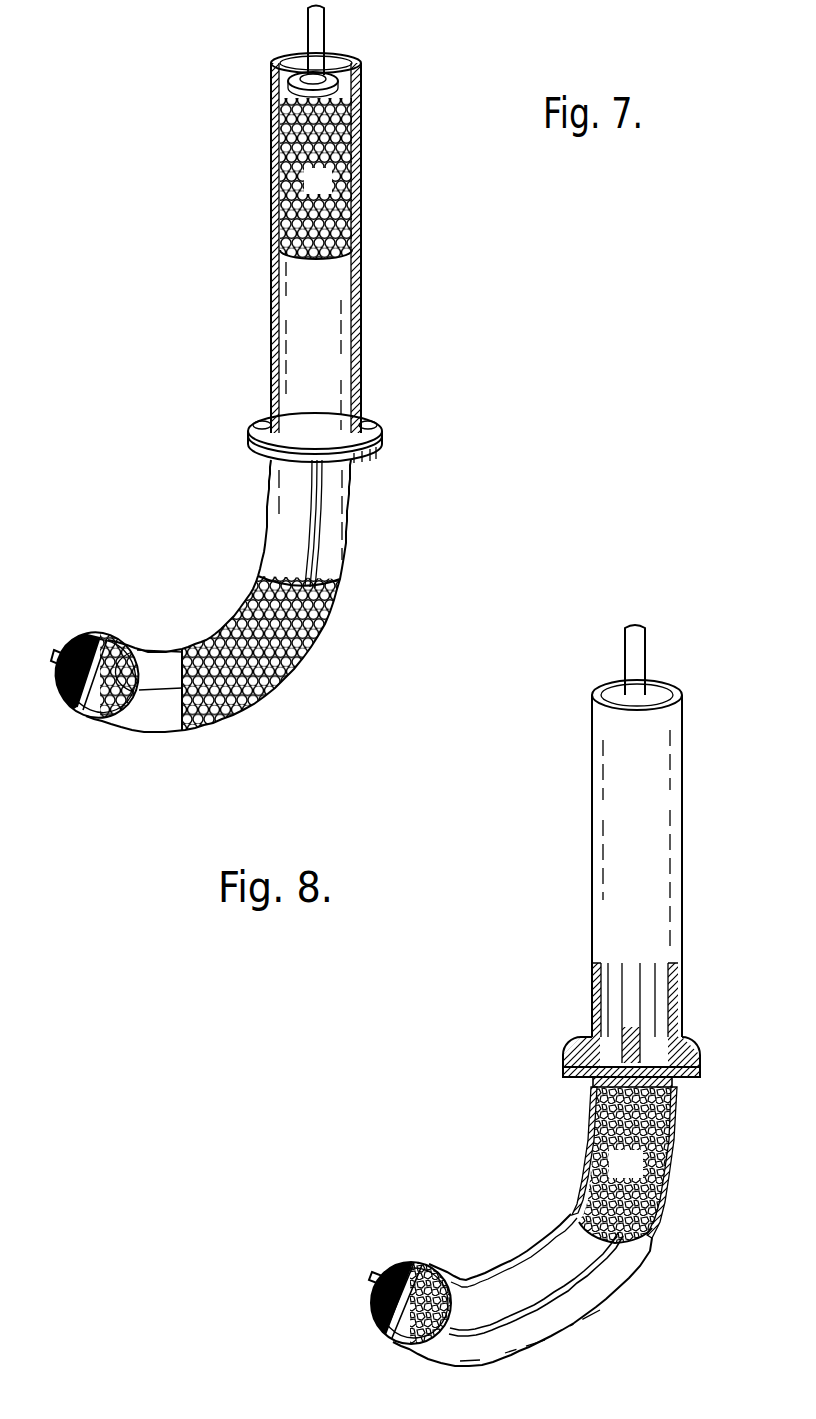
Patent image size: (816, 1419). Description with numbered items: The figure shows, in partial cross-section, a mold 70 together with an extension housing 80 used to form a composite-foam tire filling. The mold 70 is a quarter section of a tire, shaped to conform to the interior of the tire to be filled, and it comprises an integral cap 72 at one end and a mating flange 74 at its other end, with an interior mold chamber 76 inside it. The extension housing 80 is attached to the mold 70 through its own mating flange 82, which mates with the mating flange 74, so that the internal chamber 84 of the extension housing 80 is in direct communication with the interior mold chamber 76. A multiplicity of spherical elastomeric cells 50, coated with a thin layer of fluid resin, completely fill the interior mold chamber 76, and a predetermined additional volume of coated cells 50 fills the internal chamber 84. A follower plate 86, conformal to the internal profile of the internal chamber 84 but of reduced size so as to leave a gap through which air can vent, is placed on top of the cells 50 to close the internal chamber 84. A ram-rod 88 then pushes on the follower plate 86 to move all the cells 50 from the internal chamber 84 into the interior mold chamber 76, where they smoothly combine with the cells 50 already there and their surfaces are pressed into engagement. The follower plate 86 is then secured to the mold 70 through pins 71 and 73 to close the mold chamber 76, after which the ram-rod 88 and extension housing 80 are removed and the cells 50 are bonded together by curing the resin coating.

In FIG. 7, the elastomeric cells 50 is at (331, 191).
In FIG. 8, the elastomeric cells 50 is at (637, 1174).
In FIG. 7, the mold 70 is at (346, 567).
In FIG. 8, the mold 70 is at (591, 1322).
In FIG. 8, the pin 71 is at (593, 1077).
In FIG. 7, the integral cap 72 is at (86, 632).
In FIG. 8, the integral cap 72 is at (398, 1272).
In FIG. 8, the pin 73 is at (673, 1082).
In FIG. 7, the mating flange 74 is at (377, 463).
In FIG. 7, the interior mold chamber 76 is at (297, 670).
In FIG. 8, the interior mold chamber 76 is at (672, 1148).
In FIG. 7, the extension housing 80 is at (360, 318).
In FIG. 8, the extension housing 80 is at (682, 772).
In FIG. 7, the mating flange 82 is at (382, 423).
In FIG. 7, the internal chamber 84 is at (362, 192).
In FIG. 8, the internal chamber 84 is at (608, 996).
In FIG. 7, the follower plate 86 is at (273, 99).
In FIG. 8, the follower plate 86 is at (676, 1040).
In FIG. 7, the ram-rod 88 is at (326, 33).
In FIG. 8, the ram-rod 88 is at (641, 620).